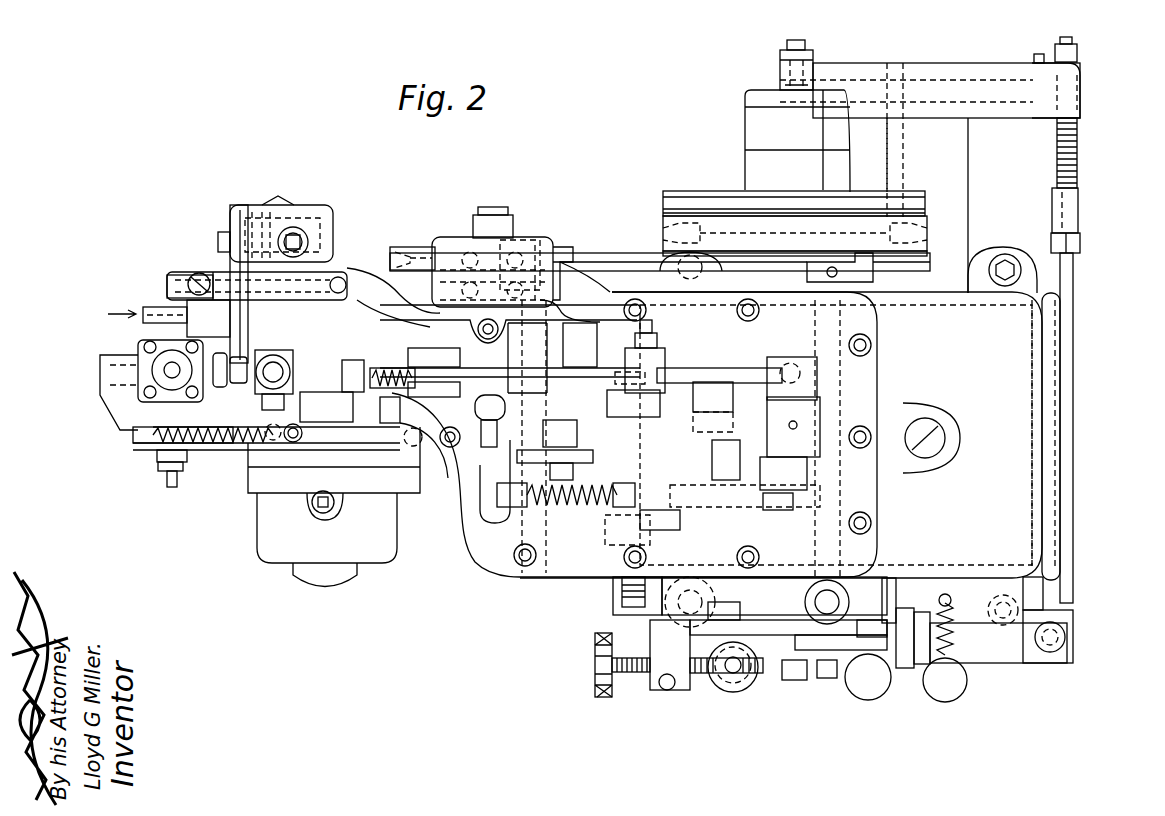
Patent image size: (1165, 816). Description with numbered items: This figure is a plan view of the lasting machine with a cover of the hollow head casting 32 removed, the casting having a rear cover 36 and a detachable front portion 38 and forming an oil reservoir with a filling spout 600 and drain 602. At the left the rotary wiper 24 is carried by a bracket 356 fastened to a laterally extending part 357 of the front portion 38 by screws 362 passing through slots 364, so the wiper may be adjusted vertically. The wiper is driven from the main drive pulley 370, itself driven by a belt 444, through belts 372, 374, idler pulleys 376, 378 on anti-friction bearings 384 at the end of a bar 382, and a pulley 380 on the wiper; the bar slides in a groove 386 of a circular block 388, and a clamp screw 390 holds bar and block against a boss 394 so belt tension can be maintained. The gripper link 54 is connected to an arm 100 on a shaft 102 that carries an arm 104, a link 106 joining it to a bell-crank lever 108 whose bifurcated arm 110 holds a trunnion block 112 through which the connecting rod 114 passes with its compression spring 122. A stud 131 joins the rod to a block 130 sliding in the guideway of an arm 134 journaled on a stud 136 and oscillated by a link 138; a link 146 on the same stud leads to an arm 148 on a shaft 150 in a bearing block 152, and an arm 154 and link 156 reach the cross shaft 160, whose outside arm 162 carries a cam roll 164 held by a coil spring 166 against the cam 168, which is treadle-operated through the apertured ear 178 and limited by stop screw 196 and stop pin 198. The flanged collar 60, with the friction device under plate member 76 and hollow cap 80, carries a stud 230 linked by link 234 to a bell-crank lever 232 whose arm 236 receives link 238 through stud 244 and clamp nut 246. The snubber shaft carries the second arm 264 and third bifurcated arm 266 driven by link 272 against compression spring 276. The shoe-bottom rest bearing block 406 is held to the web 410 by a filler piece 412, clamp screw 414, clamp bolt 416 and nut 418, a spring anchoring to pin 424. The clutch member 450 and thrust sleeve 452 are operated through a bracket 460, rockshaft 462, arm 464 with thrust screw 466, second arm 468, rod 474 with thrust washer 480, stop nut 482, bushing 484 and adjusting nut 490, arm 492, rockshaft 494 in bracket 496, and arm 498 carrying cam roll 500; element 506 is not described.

The rotary wiper 24 is at (109, 309).
The head casting 32 is at (478, 553).
The rear cover 36 is at (1062, 362).
The front portion 38 is at (230, 213).
The link 54 is at (233, 342).
The flanged collar 60 is at (262, 388).
The plate member 76 is at (250, 482).
The hollow cap 80 is at (265, 560).
The arm 100 is at (150, 326).
The shaft 102 is at (167, 288).
The arm 104 is at (356, 285).
The link 106 is at (352, 360).
The bell-crank lever 108 is at (385, 372).
The bifurcated arm 110 is at (463, 392).
The trunnion block 112 is at (460, 370).
The connecting rod 114 is at (573, 375).
The compression spring 122 is at (353, 415).
The block 130 is at (607, 402).
The stud 131 is at (617, 380).
The arm 134 is at (583, 424).
The stud 136 is at (617, 532).
The link 138 is at (713, 397).
The link 146 is at (636, 357).
The arm 148 is at (718, 368).
The shaft 150 is at (790, 358).
The bearing block 152 is at (767, 425).
The arm 154 is at (763, 458).
The link 156 is at (712, 453).
The cross shaft 160 is at (850, 506).
The arm 162 is at (900, 578).
The cam roll 164 is at (915, 578).
The coil spring 166 is at (787, 512).
The multipurpose cam 168 is at (795, 650).
The apertured ear 178 is at (718, 692).
The adjustable stop screw 196 is at (757, 674).
The stop pin 198 is at (825, 678).
The stud 230 is at (285, 420).
The bell-crank lever 232 is at (508, 420).
The link 234 is at (410, 462).
The arm 236 is at (527, 450).
The link 238 is at (713, 419).
The stud 244 is at (520, 455).
The clamp nut 246 is at (574, 472).
The second arm 264 is at (613, 600).
The third bifurcated arm 266 is at (683, 520).
The link 272 is at (718, 492).
The compression spring 276 is at (582, 507).
The bracket 356 is at (318, 205).
The laterally extending part 357 is at (234, 205).
The screws 362 is at (218, 238).
The slots 364 is at (248, 207).
The main drive pulley 370 is at (887, 256).
The belt 372 is at (618, 253).
The belt 374 is at (400, 247).
The idler pulley 376 is at (570, 245).
The idler pulley 378 is at (553, 296).
The pulley 380 is at (190, 276).
The bar 382 is at (515, 225).
The anti-friction bearings 384 is at (530, 245).
The groove 386 is at (485, 215).
The circular block 388 is at (448, 237).
The clamp screw 390 is at (503, 207).
The boss 394 is at (560, 258).
The bearing block 406 is at (138, 360).
The web 410 is at (140, 452).
The tongue-and-groove filler piece 412 is at (100, 410).
The clamp screw 414 is at (133, 435).
The clamp bolt 416 is at (172, 487).
The nut 418 is at (165, 471).
The pin 424 is at (180, 463).
The belt 444 is at (663, 228).
The clutch member 450 is at (683, 191).
The thrust sleeve 452 is at (745, 130).
The bracket 460 is at (970, 160).
The rockshaft 462 is at (935, 75).
The arm 464 is at (780, 80).
The adjustable thrust screw 466 is at (806, 45).
The second arm 468 is at (1082, 95).
The rod 474 is at (1075, 330).
The thrust washer 480 is at (1037, 55).
The stop nut 482 is at (1078, 55).
The bushing 484 is at (1078, 205).
The adjusting nut 490 is at (1082, 245).
The arm 492 is at (1045, 620).
The rockshaft 494 is at (1025, 655).
The bracket 496 is at (1020, 665).
The arm 498 is at (918, 668).
The cam roll 500 is at (905, 670).
The spring 506 is at (950, 620).
The filling spout 600 is at (863, 700).
The drain 602 is at (952, 698).